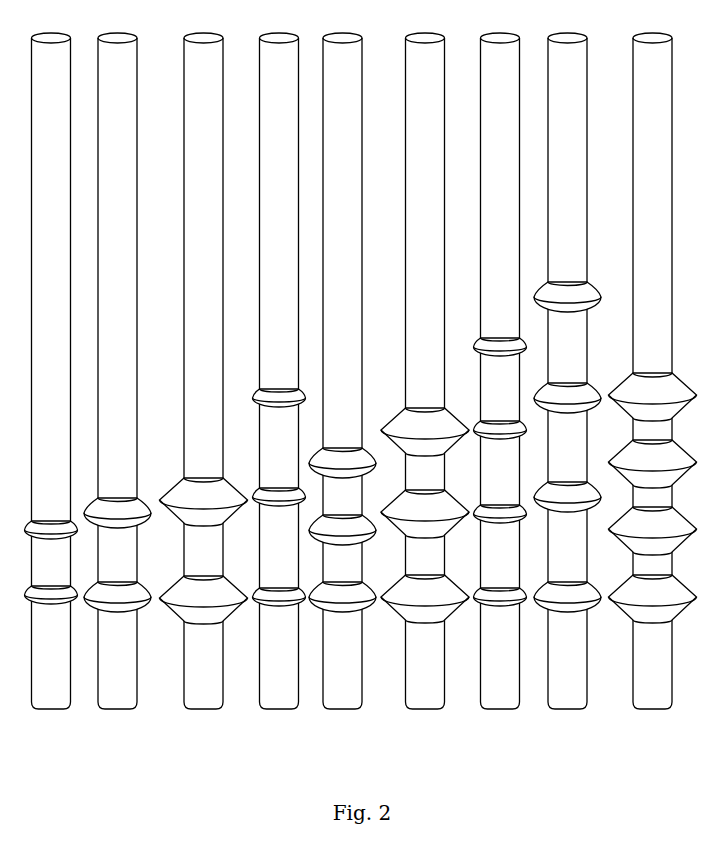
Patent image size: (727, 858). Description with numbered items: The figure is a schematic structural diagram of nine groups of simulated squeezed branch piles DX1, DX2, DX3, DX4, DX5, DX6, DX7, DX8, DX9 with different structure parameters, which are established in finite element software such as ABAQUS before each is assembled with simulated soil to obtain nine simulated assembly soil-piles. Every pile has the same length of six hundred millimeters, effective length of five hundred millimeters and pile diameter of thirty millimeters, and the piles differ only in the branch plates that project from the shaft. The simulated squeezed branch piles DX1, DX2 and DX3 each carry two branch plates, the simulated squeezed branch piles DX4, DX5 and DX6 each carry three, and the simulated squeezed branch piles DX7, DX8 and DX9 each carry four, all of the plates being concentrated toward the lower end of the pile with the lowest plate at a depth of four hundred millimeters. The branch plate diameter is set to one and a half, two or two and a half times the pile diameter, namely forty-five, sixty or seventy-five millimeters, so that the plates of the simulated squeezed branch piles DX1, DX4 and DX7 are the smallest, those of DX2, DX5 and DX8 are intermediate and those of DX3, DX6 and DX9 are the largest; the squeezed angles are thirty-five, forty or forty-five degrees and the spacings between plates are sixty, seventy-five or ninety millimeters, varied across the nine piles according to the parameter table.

The simulated squeezed branch pile DX1 is at (51, 391).
The simulated squeezed branch pile DX2 is at (117, 391).
The simulated squeezed branch pile DX3 is at (204, 391).
The simulated squeezed branch pile DX4 is at (279, 391).
The simulated squeezed branch pile DX5 is at (342, 391).
The simulated squeezed branch pile DX6 is at (425, 391).
The simulated squeezed branch pile DX7 is at (500, 391).
The simulated squeezed branch pile DX8 is at (567, 391).
The simulated squeezed branch pile DX9 is at (653, 391).